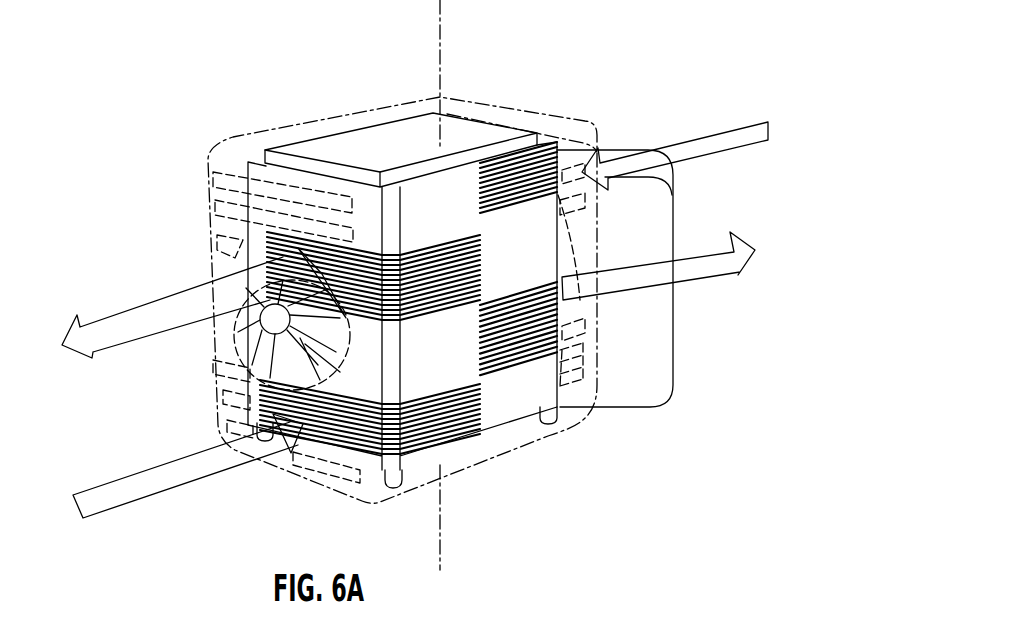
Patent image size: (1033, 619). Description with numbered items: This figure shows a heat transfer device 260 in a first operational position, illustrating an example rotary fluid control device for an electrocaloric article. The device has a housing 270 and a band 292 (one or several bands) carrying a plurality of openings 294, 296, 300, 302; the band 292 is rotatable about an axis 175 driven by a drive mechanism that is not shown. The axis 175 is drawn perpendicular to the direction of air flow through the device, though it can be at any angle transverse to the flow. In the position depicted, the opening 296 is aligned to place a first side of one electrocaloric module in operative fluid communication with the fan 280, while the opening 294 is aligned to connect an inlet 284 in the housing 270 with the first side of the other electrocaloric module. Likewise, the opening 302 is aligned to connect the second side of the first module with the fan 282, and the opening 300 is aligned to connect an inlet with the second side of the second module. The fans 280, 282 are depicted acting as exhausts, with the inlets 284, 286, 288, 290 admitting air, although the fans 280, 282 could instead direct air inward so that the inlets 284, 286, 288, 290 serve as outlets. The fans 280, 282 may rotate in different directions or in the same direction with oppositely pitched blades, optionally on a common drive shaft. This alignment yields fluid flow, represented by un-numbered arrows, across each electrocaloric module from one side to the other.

The axis 175 is at (438, 55).
The heat transfer device 260 is at (778, 68).
The housing 270 is at (517, 107).
The fan 280 is at (562, 252).
The fan 282 is at (262, 326).
The inlet 284 is at (565, 172).
The inlet 286 is at (575, 357).
The inlet 288 is at (265, 218).
The inlet 290 is at (233, 402).
The band 292 is at (673, 268).
The opening 294 is at (523, 173).
The opening 296 is at (555, 340).
The opening 300 is at (425, 438).
The opening 302 is at (413, 285).